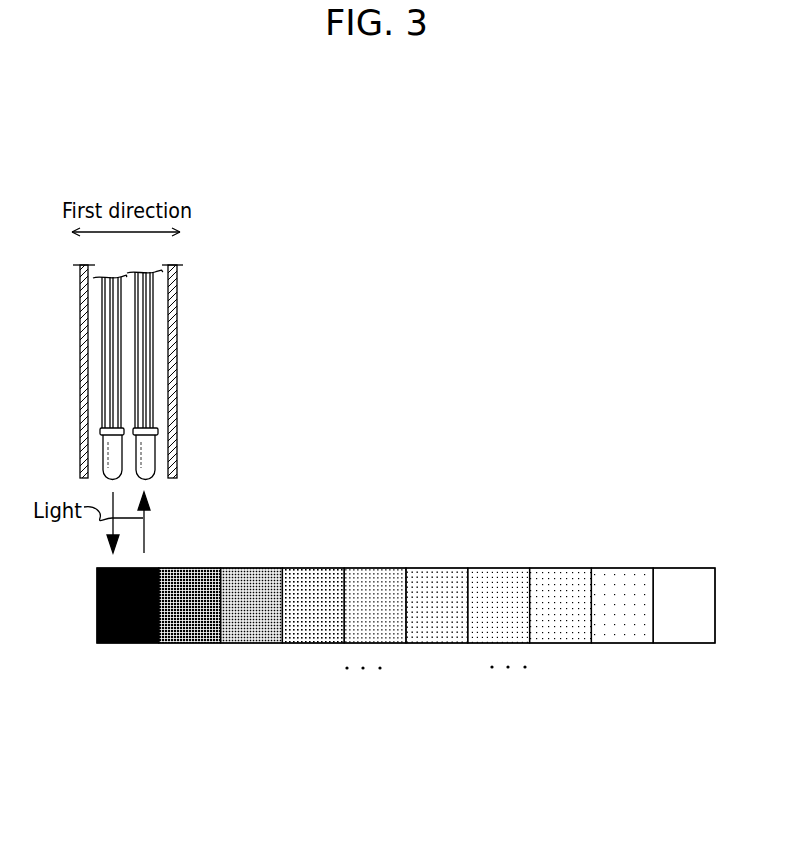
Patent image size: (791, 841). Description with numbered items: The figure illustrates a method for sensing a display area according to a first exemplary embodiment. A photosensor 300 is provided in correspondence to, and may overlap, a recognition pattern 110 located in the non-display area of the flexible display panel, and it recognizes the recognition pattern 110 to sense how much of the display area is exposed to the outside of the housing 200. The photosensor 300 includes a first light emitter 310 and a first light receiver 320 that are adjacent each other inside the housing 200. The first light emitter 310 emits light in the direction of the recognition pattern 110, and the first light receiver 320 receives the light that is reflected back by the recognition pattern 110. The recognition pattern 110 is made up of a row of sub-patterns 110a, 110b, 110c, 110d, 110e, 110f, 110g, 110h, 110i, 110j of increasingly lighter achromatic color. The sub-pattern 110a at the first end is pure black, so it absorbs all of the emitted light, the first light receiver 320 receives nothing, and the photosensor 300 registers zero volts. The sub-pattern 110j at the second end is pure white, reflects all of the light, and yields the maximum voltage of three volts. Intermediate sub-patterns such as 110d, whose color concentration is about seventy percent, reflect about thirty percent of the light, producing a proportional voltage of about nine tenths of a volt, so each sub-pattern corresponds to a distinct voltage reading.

The recognition pattern 110 is at (406, 688).
The sub-pattern 110a is at (110, 643).
The sub-pattern 110b is at (168, 643).
The sub-pattern 110c is at (227, 643).
The sub-pattern 110d is at (290, 643).
The sub-pattern 110e is at (373, 643).
The sub-pattern 110f is at (440, 643).
The sub-pattern 110g is at (502, 643).
The sub-pattern 110h is at (585, 643).
The sub-pattern 110i is at (648, 643).
The sub-pattern 110j is at (708, 643).
The housing 200 is at (83, 342).
The photosensor 300 is at (158, 323).
The first light emitter 310 is at (105, 448).
The first light receiver 320 is at (148, 448).